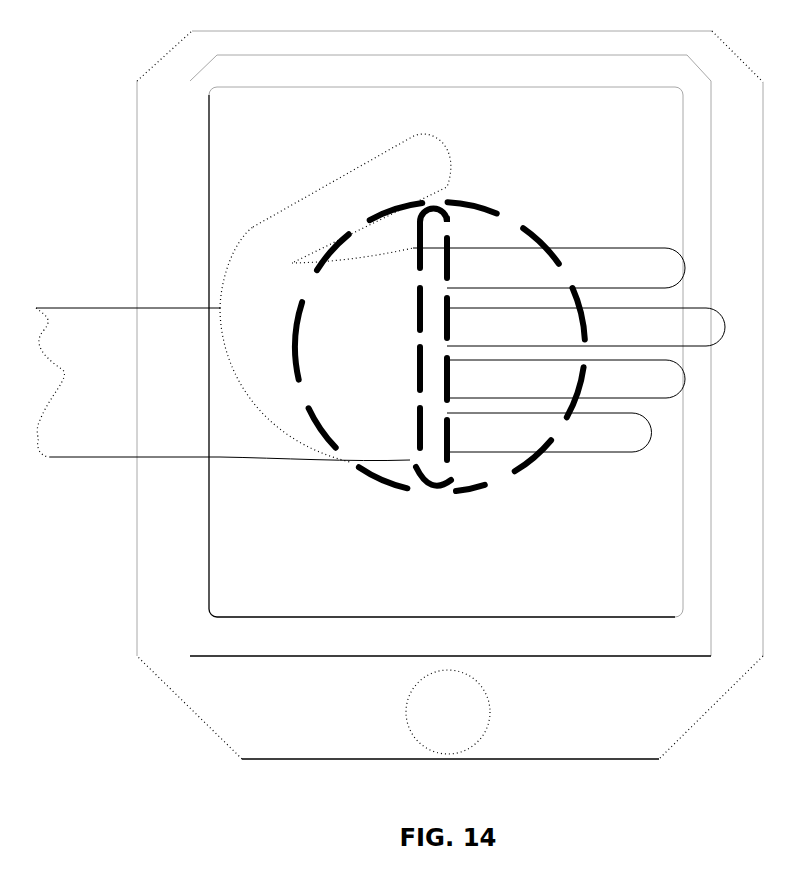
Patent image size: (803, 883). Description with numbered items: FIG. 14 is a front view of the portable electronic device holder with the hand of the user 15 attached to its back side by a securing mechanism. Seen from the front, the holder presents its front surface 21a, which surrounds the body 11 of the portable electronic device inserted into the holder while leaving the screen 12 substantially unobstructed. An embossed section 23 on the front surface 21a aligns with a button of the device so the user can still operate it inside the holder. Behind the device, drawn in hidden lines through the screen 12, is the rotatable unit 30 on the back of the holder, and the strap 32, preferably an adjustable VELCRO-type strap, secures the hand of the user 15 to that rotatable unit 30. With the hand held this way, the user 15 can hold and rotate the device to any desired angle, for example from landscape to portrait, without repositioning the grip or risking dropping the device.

The body 11 is at (450, 355).
The screen 12 is at (446, 352).
The user 15 is at (105, 307).
The front surface 21a is at (450, 395).
The embossed section 23 is at (448, 712).
The rotatable unit 30 is at (408, 487).
The strap 32 is at (448, 229).